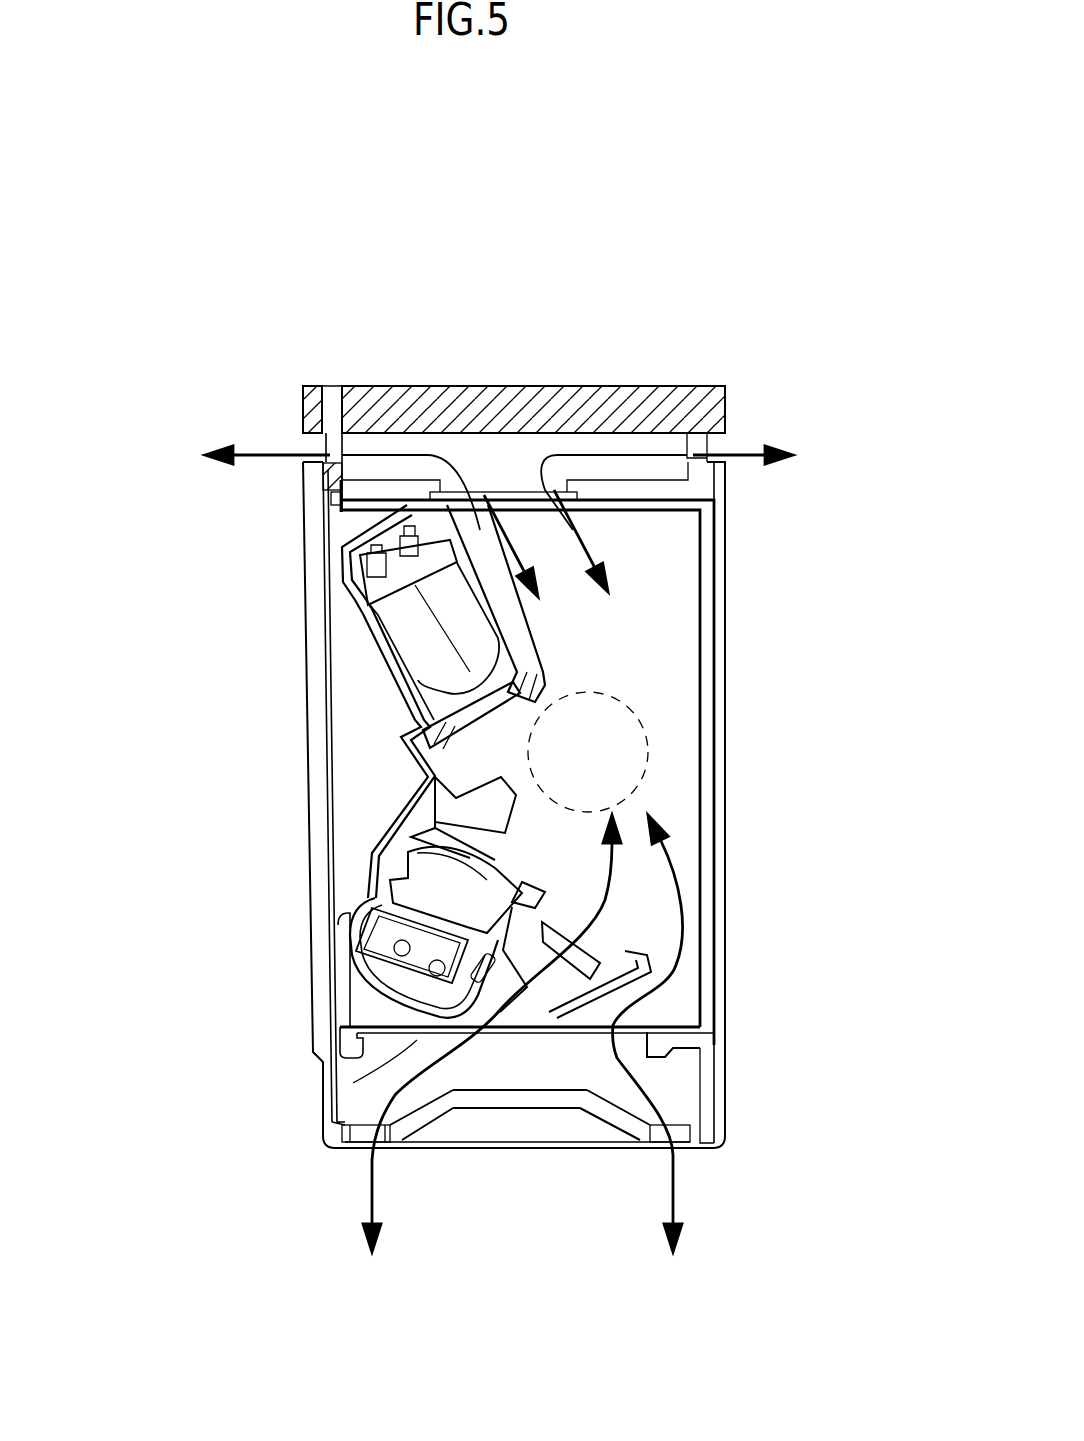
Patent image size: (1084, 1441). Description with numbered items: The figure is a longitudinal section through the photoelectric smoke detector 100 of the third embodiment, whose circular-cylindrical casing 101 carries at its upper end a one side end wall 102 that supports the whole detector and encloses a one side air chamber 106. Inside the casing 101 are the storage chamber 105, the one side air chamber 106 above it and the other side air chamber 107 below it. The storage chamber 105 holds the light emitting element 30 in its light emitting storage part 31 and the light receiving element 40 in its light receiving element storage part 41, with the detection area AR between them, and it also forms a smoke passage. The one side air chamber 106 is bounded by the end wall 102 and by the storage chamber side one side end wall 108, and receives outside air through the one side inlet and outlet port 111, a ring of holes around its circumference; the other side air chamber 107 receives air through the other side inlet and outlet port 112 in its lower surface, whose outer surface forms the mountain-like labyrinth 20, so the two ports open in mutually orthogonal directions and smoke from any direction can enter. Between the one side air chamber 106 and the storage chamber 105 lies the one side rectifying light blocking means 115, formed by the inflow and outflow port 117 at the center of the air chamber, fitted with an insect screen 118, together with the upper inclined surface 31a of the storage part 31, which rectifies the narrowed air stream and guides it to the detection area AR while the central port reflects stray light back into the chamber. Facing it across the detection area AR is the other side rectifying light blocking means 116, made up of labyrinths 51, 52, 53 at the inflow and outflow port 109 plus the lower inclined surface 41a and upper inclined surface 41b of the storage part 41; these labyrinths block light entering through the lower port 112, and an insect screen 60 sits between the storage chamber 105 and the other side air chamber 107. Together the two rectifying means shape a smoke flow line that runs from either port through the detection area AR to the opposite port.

The photoelectric smoke detector 100 is at (800, 207).
The casing 101 is at (307, 780).
The one side end wall 102 is at (573, 395).
The storage chamber 105 is at (680, 787).
The one side air chamber 106 is at (452, 445).
The other side air chamber 107 is at (475, 1030).
The storage chamber side one side end wall 108 is at (627, 492).
The inflow and outflow port 109 is at (617, 1082).
The one side inlet and outlet port 111 is at (323, 442).
The other side inlet and outlet port 112 is at (357, 1137).
The one side rectifying light blocking means 115 is at (489, 478).
The other side rectifying light blocking means 116 is at (583, 1030).
The inflow and outflow port 117 is at (468, 458).
The insect screen 118 is at (530, 485).
The mountain-like labyrinth 20 is at (513, 1108).
The light emitting element 30 is at (418, 640).
The light emitting storage part 31 is at (430, 724).
The upper inclined surface 31a is at (530, 645).
The light receiving element 40 is at (453, 980).
The light receiving element storage part 41 is at (400, 822).
The lower inclined surface 41a is at (468, 1063).
The upper inclined surface 41b is at (527, 937).
The labyrinth 51 is at (641, 964).
The labyrinth 52 is at (557, 1017).
The labyrinth 53 is at (663, 1042).
The insect screen 60 is at (373, 1086).
The detection area AR is at (640, 705).